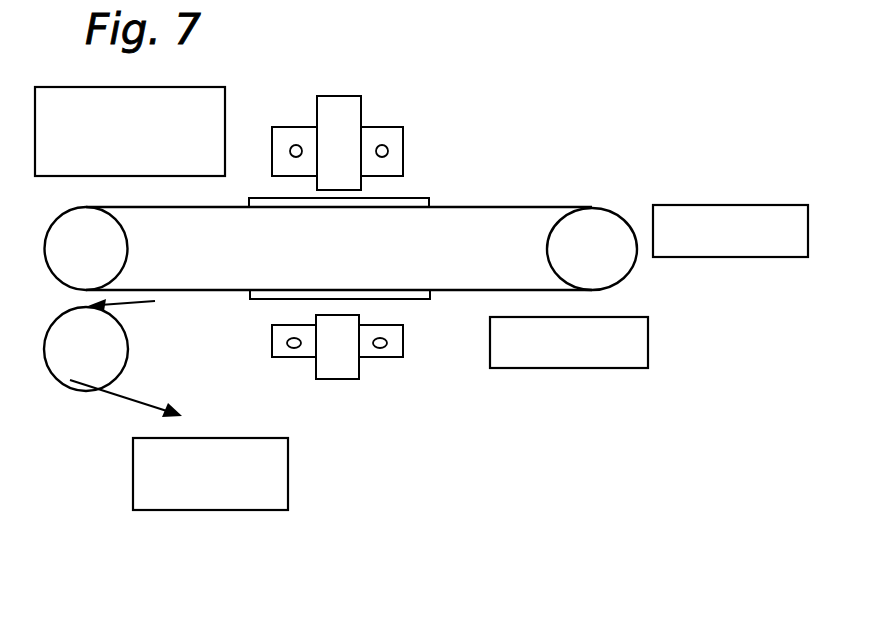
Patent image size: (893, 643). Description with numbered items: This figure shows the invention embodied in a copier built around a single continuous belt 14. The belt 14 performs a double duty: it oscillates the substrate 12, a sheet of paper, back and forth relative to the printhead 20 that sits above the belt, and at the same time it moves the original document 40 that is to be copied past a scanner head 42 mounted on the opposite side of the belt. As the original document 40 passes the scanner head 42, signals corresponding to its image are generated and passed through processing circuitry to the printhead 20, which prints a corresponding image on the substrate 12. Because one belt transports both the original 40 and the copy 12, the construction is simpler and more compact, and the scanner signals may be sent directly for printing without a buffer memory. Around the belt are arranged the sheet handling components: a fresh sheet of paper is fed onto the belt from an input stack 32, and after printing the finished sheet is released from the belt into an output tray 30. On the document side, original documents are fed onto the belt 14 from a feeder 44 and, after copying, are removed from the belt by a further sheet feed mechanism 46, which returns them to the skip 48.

The substrate 12 is at (430, 198).
The belt 14 is at (562, 207).
The printhead 20 is at (340, 99).
The output tray 30 is at (730, 231).
The input stack 32 is at (130, 131).
The original document 40 is at (254, 299).
The scanner head 42 is at (342, 379).
The feeder 44 is at (569, 342).
The sheet feed mechanism 46 is at (70, 381).
The skip 48 is at (210, 474).